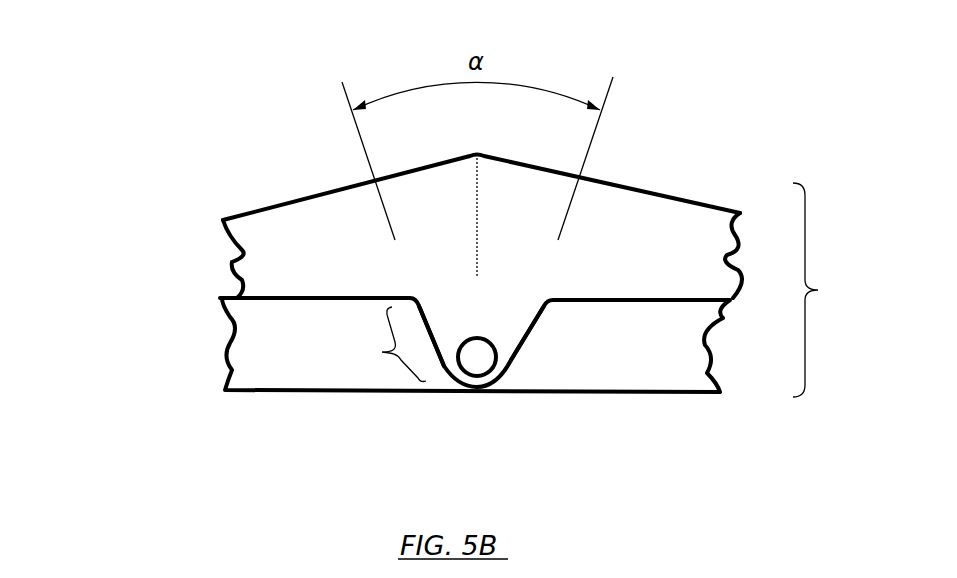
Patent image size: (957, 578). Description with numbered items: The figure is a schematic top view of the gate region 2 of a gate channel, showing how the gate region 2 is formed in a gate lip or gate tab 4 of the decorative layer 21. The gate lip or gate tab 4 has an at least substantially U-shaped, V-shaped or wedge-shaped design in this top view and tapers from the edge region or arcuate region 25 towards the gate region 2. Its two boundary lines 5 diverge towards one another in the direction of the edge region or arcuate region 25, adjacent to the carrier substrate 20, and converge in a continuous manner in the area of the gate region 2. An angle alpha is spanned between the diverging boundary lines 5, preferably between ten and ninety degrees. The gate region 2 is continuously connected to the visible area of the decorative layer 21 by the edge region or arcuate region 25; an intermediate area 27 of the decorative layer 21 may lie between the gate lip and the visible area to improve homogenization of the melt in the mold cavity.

The gate region 2 is at (478, 360).
The gate lip or gate tab 4 is at (394, 344).
The boundary lines 5 is at (441, 368).
The carrier substrate 20 is at (297, 368).
The decorative layer 21 is at (402, 227).
The intermediate area 27 is at (300, 227).
The edge region or arcuate region 25 is at (827, 290).